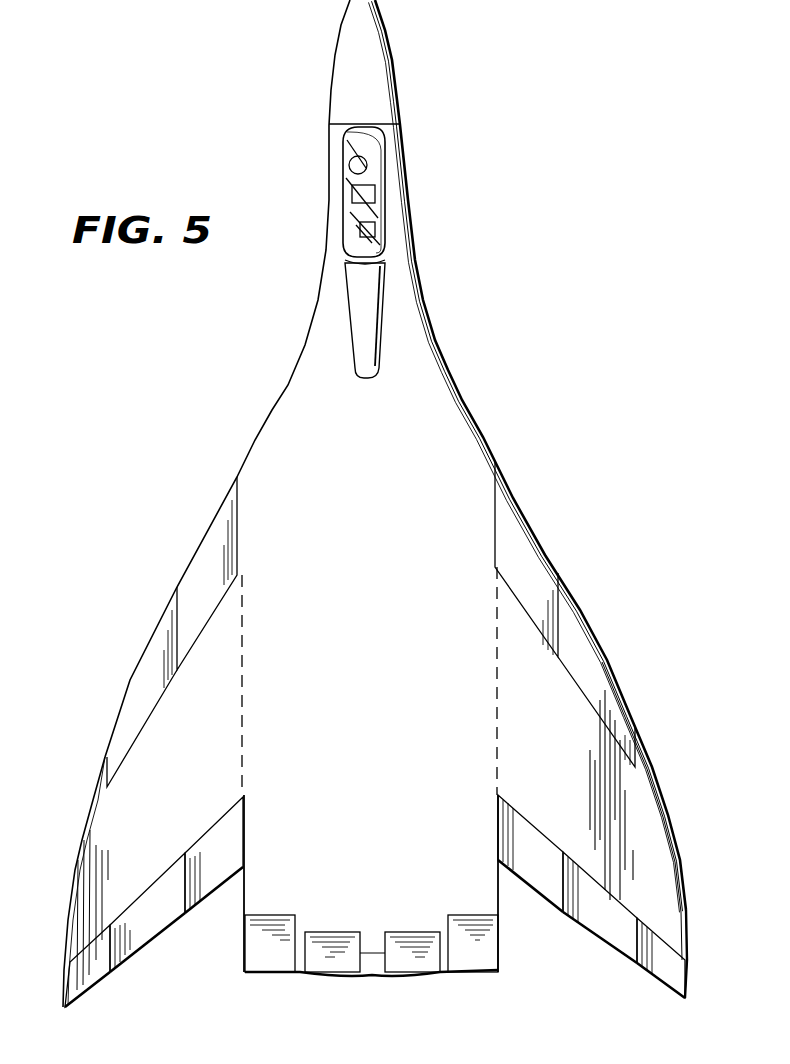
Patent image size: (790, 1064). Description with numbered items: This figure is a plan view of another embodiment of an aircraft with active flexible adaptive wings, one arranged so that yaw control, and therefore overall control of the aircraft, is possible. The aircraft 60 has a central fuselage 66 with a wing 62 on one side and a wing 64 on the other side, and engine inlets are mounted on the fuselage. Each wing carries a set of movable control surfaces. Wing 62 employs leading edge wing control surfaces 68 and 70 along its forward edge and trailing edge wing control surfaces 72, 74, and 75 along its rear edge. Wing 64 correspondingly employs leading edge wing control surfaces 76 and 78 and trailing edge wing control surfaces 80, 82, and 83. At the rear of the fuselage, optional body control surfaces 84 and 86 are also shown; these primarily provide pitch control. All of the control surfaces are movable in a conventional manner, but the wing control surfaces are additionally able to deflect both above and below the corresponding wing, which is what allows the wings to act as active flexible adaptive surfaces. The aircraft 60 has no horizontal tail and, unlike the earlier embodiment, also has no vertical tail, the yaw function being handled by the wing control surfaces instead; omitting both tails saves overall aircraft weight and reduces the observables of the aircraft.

The aircraft 60 is at (422, 206).
The wing 62 is at (638, 785).
The wing 64 is at (123, 833).
The fuselage 66 is at (403, 318).
The leading edge wing control surface 68 is at (587, 637).
The leading edge wing control surface 70 is at (517, 520).
The trailing edge wing control surface 72 is at (660, 963).
The trailing edge wing control surface 74 is at (610, 925).
The trailing edge wing control surface 75 is at (545, 873).
The leading edge wing control surface 76 is at (140, 688).
The leading edge wing control surface 78 is at (220, 532).
The trailing edge wing control surface 80 is at (100, 973).
The trailing edge wing control surface 82 is at (150, 932).
The trailing edge wing control surface 83 is at (203, 883).
The body control surface 84 is at (423, 960).
The body control surface 86 is at (342, 960).